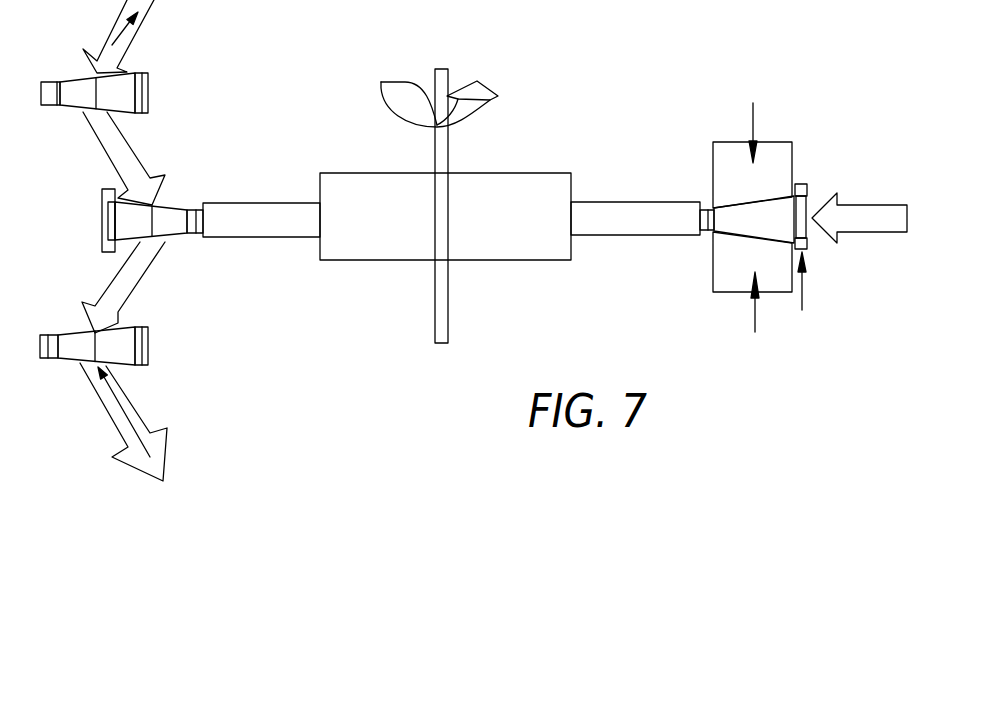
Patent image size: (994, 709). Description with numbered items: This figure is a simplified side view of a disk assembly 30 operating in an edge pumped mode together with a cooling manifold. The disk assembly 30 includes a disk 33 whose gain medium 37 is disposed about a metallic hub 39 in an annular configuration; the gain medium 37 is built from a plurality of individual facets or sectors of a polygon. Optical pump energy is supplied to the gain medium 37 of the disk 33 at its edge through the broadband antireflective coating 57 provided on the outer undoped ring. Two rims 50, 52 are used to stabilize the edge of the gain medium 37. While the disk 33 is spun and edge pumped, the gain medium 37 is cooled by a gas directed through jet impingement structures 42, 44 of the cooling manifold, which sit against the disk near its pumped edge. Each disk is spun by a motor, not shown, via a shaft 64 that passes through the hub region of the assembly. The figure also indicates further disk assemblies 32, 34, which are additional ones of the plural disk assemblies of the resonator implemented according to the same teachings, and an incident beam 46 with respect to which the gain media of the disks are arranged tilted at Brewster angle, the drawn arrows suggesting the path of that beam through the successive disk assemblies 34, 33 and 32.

The disk assembly 30 is at (537, 140).
The disk assembly 32 is at (147, 347).
The disk 33 is at (173, 203).
The disk assembly 34 is at (140, 54).
The gain medium 37 is at (712, 232).
The metallic hub 39 is at (347, 173).
The jet impingement structure 42 is at (792, 152).
The jet impingement structure 44 is at (767, 294).
The incident beam 46 is at (140, 415).
The rim 50 is at (808, 250).
The rim 52 is at (801, 184).
The broadband antireflective coating 57 is at (807, 225).
The shaft 64 is at (435, 297).